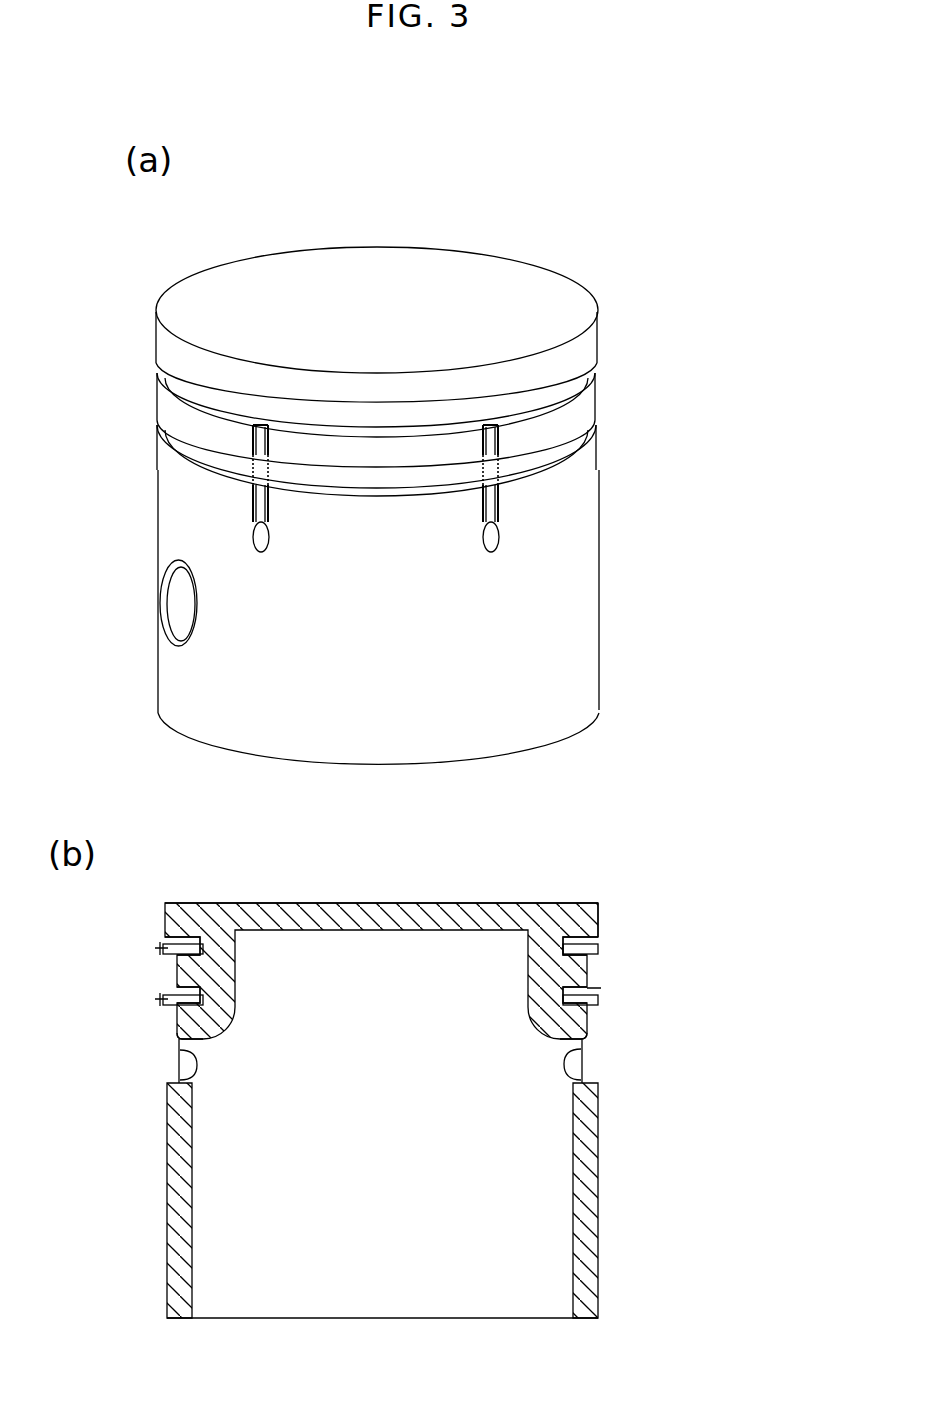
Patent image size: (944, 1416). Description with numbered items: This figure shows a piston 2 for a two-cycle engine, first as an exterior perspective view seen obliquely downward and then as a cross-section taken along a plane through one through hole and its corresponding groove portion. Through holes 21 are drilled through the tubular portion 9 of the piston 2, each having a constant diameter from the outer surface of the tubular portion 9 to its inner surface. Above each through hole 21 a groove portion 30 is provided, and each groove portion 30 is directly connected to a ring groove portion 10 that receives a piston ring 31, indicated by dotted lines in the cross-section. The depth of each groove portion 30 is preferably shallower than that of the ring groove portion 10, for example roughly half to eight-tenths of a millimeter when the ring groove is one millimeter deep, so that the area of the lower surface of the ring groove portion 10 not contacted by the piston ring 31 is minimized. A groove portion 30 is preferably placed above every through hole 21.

The piston 2 is at (557, 218).
The tubular portion 9 is at (557, 611).
The ring groove portion 10 is at (593, 358).
The through hole 21 is at (505, 541).
The groove portion 30 is at (262, 432).
The piston ring 31 is at (160, 948).